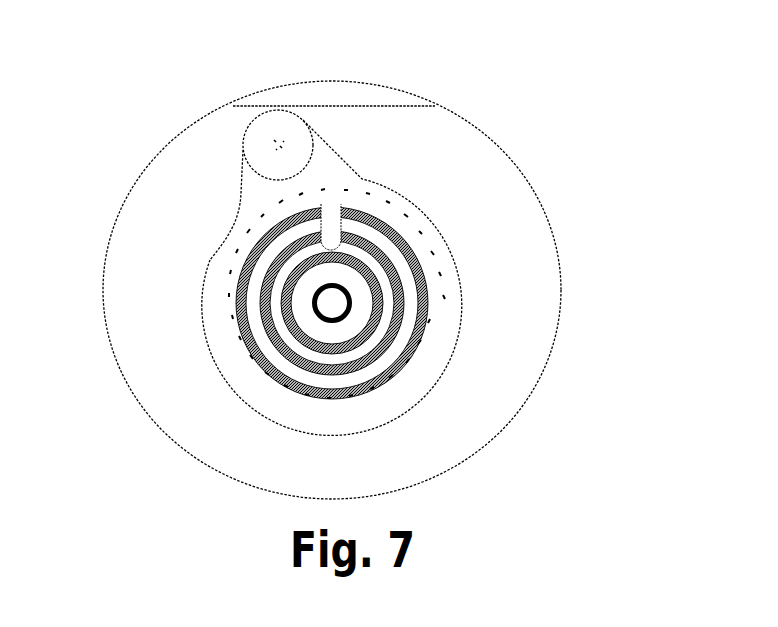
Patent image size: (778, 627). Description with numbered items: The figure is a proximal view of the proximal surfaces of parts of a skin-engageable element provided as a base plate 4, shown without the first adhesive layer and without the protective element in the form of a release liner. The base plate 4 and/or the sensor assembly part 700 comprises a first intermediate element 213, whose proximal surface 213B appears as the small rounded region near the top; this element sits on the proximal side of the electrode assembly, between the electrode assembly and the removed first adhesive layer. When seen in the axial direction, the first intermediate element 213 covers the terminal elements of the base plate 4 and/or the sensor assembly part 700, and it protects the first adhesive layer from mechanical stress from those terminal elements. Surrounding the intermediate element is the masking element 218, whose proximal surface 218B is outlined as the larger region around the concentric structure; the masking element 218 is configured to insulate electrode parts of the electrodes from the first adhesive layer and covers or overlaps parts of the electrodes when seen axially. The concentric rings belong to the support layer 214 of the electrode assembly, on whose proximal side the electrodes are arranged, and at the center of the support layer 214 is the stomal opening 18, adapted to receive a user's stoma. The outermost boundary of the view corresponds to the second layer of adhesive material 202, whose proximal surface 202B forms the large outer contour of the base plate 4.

The base plate 4 is at (392, 264).
The sensor assembly part 700 is at (133, 106).
The second layer of adhesive material 202 is at (432, 290).
The proximal surface of second adhesive layer 202B is at (537, 348).
The first intermediate element 213 is at (241, 104).
The proximal surface of first intermediate element 213B is at (258, 130).
The masking element 218 is at (468, 277).
The proximal surface of masking element 218B is at (405, 213).
The support layer 214 is at (284, 340).
The stomal opening 18 is at (334, 308).